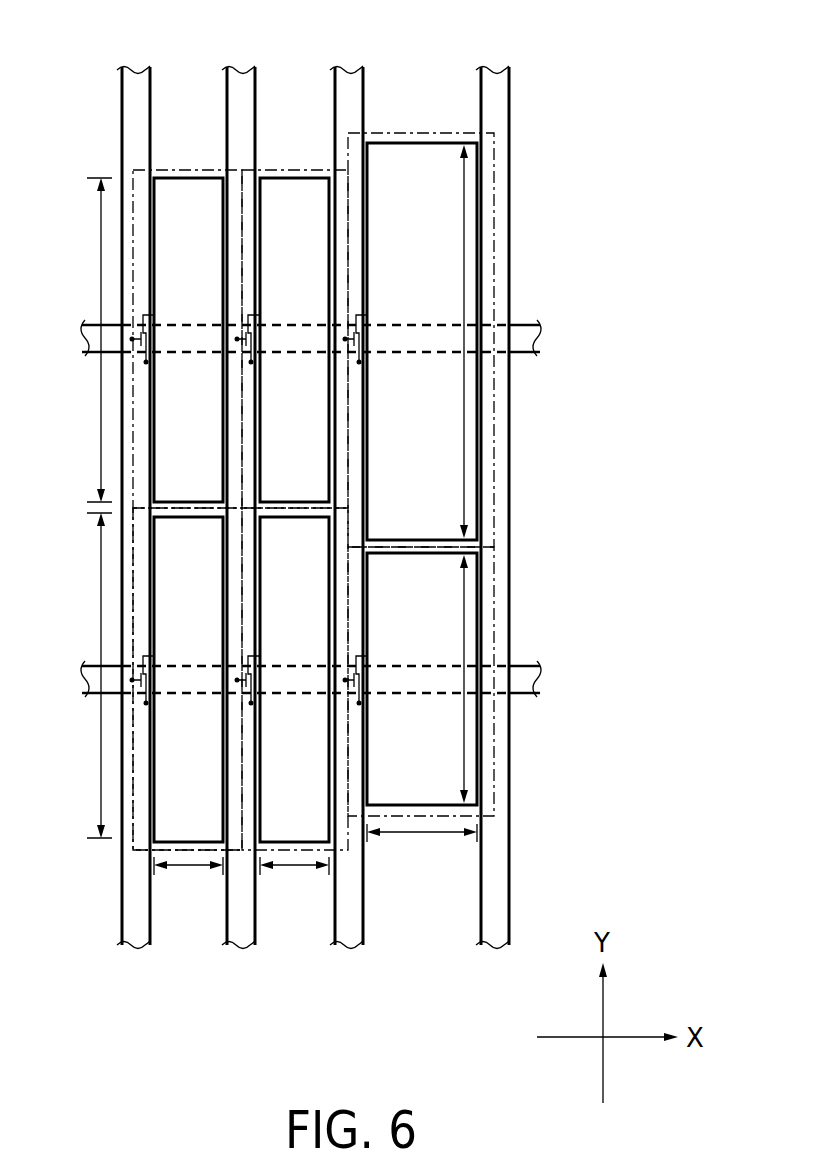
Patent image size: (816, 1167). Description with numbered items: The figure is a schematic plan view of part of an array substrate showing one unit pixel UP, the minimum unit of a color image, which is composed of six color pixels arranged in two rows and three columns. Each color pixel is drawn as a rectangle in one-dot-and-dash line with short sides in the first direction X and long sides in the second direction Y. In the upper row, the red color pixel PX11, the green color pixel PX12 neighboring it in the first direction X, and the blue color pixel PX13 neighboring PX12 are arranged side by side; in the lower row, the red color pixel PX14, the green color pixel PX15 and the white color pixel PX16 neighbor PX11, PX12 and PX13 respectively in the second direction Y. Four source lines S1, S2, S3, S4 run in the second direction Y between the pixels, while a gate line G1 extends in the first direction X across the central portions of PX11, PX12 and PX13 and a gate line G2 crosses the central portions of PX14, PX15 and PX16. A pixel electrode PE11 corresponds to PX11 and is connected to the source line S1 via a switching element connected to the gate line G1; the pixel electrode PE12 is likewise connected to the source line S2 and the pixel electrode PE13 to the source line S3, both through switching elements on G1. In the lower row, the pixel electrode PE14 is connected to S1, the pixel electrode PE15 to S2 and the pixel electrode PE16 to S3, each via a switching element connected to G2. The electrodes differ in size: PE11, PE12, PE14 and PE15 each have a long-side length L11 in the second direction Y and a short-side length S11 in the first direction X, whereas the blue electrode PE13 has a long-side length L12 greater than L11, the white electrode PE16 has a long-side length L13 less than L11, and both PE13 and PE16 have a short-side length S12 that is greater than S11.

The source line S1 is at (132, 70).
The source line S2 is at (243, 70).
The source line S3 is at (349, 70).
The source line S4 is at (499, 70).
The gate line G1 is at (76, 339).
The gate line G2 is at (76, 680).
The first pixel electrode PE11 is at (186, 178).
The second pixel electrode PE12 is at (292, 178).
The third pixel electrode PE13 is at (425, 143).
The fourth pixel electrode PE14 is at (180, 843).
The fifth pixel electrode PE15 is at (286, 843).
The sixth pixel electrode PE16 is at (407, 806).
The first color pixel PX11 is at (187, 339).
The second color pixel PX12 is at (295, 339).
The third color pixel PX13 is at (421, 340).
The fourth color pixel PX14 is at (187, 679).
The fifth color pixel PX15 is at (295, 679).
The sixth color pixel PX16 is at (421, 681).
The long-side length L11 is at (99, 247).
The long-side length L12 is at (463, 235).
The long-side length L13 is at (463, 620).
The short-side length S11 is at (198, 866).
The short-side length S12 is at (440, 833).
The unit pixel UP is at (140, 852).